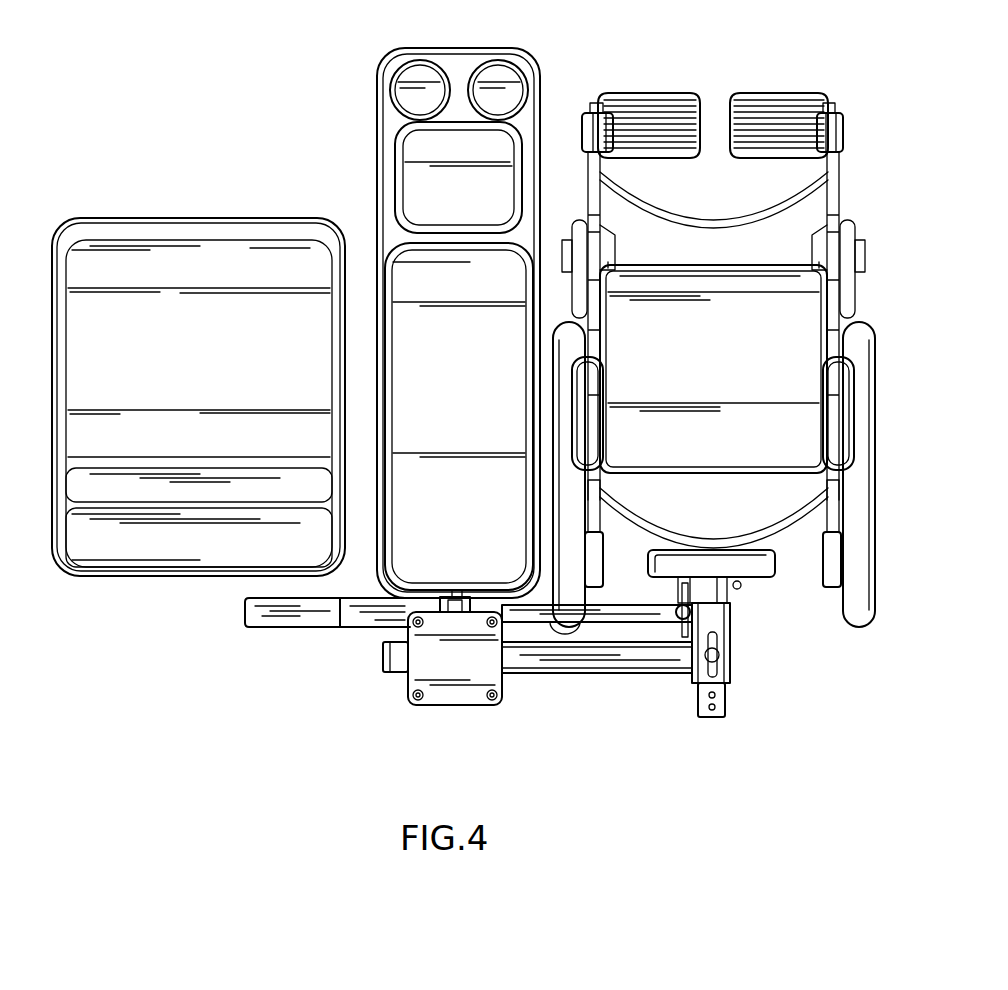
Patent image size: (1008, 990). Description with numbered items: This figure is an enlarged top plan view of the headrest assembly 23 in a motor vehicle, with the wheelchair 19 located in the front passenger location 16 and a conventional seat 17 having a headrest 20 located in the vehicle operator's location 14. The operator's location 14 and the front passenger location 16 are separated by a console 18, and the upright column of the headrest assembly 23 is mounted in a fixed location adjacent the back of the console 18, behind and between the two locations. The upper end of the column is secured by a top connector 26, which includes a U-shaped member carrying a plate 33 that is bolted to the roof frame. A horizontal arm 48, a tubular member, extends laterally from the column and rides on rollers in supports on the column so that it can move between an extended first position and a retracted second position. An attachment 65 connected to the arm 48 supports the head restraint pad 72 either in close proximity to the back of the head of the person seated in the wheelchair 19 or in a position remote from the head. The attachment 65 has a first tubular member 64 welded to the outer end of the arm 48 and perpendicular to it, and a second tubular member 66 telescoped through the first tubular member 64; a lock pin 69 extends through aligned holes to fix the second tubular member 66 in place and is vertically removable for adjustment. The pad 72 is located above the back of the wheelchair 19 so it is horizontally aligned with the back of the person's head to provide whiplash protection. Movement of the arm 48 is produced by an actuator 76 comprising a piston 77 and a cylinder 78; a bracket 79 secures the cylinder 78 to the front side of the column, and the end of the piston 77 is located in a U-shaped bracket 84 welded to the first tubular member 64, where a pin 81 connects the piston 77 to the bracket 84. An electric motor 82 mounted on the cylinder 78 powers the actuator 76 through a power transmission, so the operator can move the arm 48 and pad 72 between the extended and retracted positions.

The operator's location 14 is at (198, 396).
The front passenger location 16 is at (721, 388).
The conventional seat 17 is at (268, 255).
The console 18 is at (455, 55).
The wheelchair 19 is at (843, 125).
The headrest 20 is at (158, 555).
The headrest assembly 23 is at (458, 645).
The top connector 26 is at (472, 676).
The plate 33 is at (452, 690).
The horizontal arm 48 is at (592, 660).
The first tubular member 64 is at (717, 667).
The attachment 65 is at (745, 677).
The second tubular member 66 is at (698, 703).
The lock pin 69 is at (703, 665).
The head restraint pad 72 is at (757, 570).
The actuator 76 is at (317, 650).
The piston 77 is at (608, 610).
The cylinder 78 is at (372, 625).
The bracket 79 is at (443, 590).
The pin 81 is at (676, 608).
The electric motor 82 is at (275, 625).
The U-shaped bracket 84 is at (680, 625).